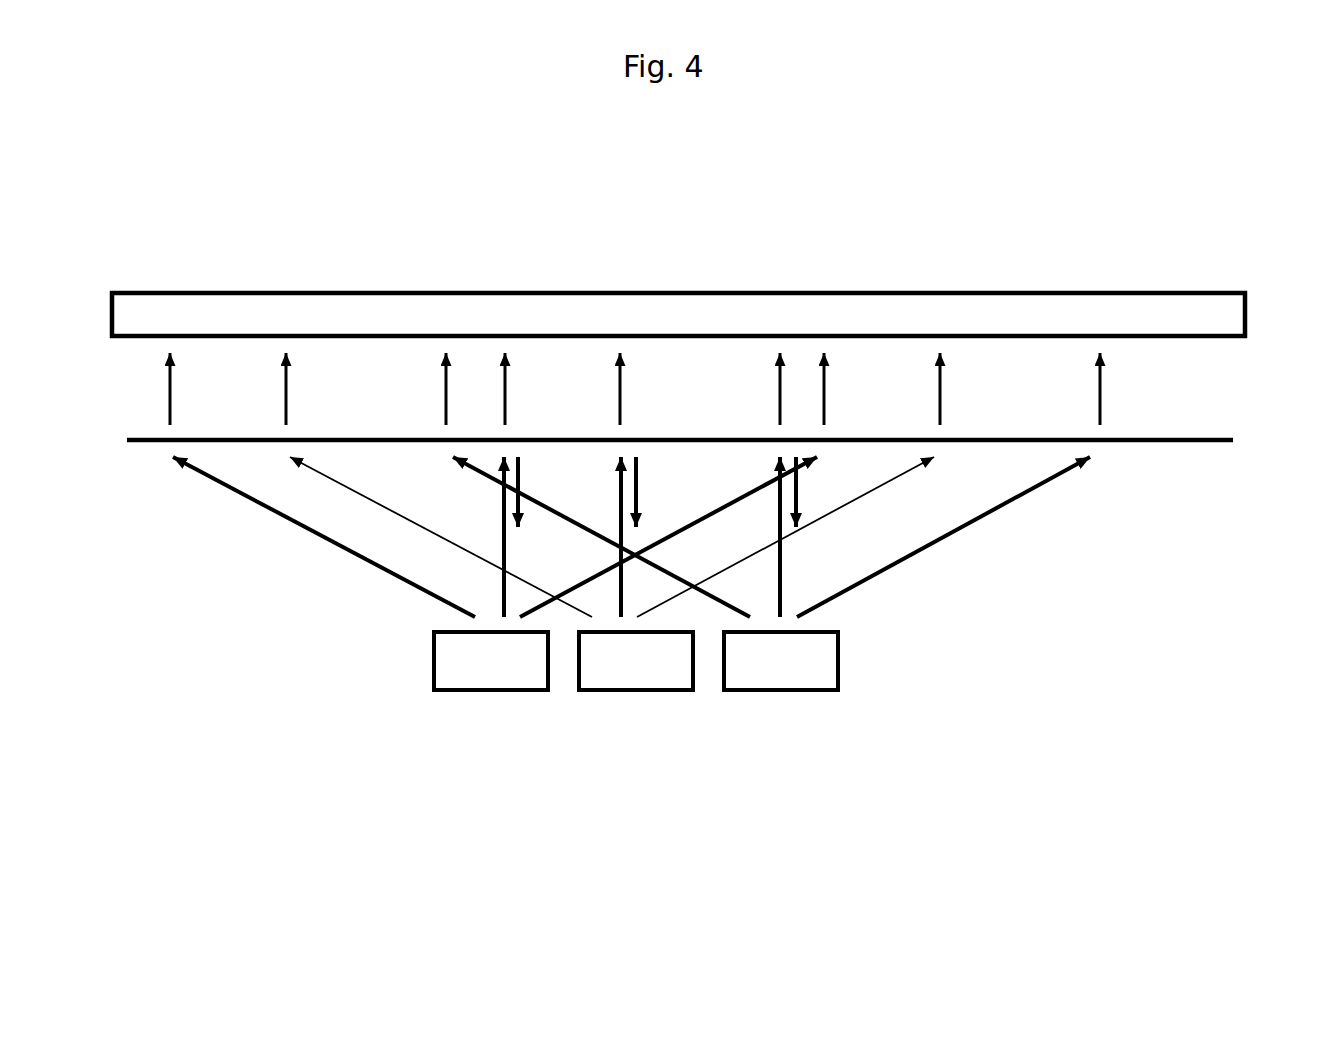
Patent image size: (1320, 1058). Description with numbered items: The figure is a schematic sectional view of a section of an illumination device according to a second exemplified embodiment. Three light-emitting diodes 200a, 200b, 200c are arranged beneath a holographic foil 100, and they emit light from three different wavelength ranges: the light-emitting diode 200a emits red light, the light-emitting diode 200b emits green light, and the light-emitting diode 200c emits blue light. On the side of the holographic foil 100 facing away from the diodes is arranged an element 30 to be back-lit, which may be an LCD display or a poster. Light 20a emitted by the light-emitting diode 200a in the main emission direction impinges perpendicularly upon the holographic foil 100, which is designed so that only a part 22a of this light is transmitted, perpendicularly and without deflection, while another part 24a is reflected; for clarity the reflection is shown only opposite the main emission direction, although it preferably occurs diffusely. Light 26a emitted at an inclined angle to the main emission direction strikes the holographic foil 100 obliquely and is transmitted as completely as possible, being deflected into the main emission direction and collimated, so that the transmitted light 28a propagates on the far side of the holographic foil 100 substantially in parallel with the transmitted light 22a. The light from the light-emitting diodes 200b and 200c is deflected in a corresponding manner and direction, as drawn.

The element to be back-lit 30 is at (367, 309).
The holographic foil 100 is at (1150, 455).
The transmitted light 28a is at (182, 390).
The transmitted part of the light 22a is at (515, 390).
The reflected part of the light 24a is at (537, 475).
The light emitted in the main emission direction 20a is at (497, 523).
The light emitted at an inclined angle 26a is at (312, 547).
The light-emitting diode 200a is at (497, 705).
The light-emitting diode 200b is at (635, 705).
The light-emitting diode 200c is at (782, 702).